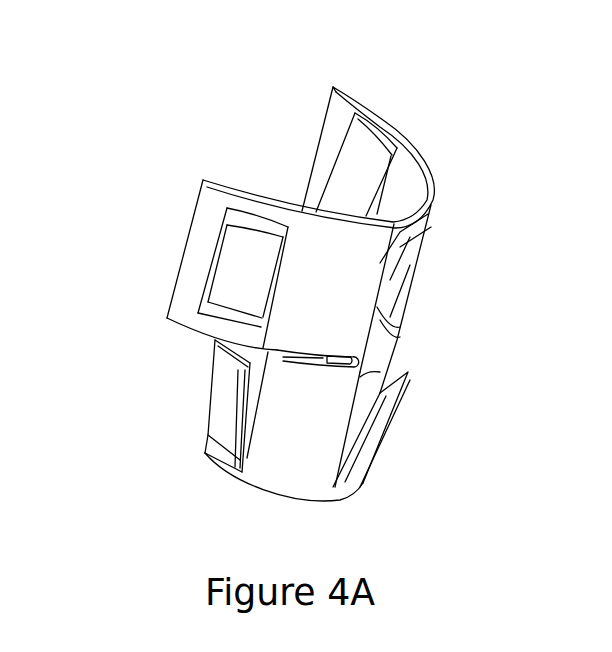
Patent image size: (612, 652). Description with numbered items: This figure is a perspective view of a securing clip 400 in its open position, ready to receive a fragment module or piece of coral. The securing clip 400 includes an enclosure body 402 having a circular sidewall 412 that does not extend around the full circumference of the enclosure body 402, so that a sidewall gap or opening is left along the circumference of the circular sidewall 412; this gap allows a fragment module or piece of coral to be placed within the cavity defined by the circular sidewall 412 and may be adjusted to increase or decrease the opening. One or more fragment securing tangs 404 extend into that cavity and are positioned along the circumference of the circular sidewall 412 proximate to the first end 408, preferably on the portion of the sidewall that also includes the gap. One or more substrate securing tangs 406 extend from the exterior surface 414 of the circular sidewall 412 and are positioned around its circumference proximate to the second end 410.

The securing clip 400 is at (129, 45).
The enclosure body 402 is at (333, 125).
The fragment securing tang 404 is at (222, 282).
The substrate securing tang 406 is at (387, 406).
The first end 408 is at (421, 151).
The second end 410 is at (337, 503).
The circular sidewall 412 is at (380, 352).
The exterior surface 414 is at (265, 427).